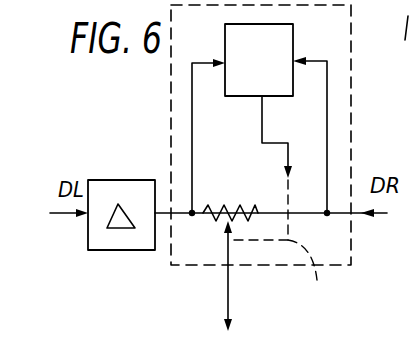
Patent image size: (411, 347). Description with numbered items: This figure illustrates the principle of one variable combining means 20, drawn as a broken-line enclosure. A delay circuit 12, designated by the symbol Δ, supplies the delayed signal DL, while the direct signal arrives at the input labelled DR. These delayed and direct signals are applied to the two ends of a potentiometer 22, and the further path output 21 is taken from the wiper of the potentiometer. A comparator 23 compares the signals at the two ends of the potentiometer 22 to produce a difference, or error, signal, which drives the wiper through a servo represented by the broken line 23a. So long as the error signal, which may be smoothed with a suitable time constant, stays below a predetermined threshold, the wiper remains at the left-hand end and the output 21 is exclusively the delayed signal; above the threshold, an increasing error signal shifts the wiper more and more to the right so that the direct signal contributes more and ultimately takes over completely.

The delay circuit 12 is at (137, 174).
The variable combining means 20 is at (352, 82).
The further path output 21 is at (228, 290).
The potentiometer 22 is at (222, 210).
The comparator 23 is at (294, 29).
The servo 23a is at (292, 250).